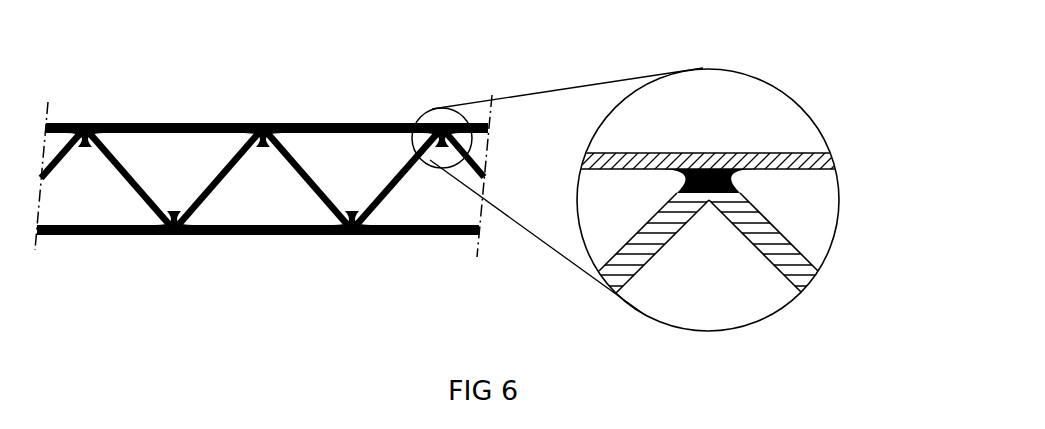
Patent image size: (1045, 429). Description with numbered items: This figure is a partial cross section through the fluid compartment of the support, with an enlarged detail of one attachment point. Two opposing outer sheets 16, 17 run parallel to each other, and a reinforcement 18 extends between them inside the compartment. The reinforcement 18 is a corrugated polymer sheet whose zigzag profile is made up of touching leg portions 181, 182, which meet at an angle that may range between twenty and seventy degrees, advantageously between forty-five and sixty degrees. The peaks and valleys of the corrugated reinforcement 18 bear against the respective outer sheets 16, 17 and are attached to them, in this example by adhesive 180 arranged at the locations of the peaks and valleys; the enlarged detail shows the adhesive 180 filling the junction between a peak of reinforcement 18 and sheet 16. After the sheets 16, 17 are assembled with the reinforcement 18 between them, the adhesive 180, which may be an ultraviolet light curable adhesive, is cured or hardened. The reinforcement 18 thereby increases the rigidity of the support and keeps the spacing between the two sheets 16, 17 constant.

The sheet 16 is at (323, 125).
The sheet 17 is at (433, 235).
The reinforcement 18 is at (218, 178).
The adhesive 180 is at (757, 178).
The leg portion 181 is at (203, 195).
The leg portion 182 is at (323, 197).